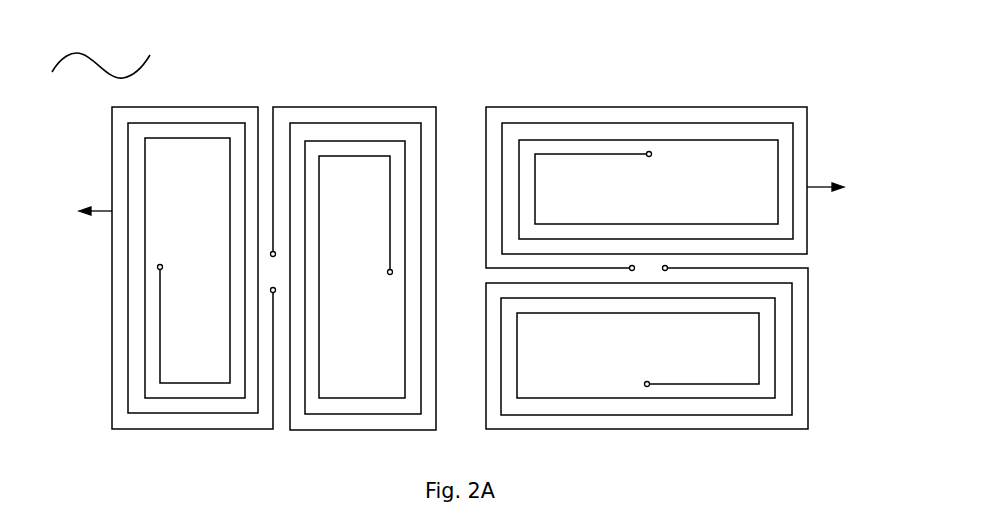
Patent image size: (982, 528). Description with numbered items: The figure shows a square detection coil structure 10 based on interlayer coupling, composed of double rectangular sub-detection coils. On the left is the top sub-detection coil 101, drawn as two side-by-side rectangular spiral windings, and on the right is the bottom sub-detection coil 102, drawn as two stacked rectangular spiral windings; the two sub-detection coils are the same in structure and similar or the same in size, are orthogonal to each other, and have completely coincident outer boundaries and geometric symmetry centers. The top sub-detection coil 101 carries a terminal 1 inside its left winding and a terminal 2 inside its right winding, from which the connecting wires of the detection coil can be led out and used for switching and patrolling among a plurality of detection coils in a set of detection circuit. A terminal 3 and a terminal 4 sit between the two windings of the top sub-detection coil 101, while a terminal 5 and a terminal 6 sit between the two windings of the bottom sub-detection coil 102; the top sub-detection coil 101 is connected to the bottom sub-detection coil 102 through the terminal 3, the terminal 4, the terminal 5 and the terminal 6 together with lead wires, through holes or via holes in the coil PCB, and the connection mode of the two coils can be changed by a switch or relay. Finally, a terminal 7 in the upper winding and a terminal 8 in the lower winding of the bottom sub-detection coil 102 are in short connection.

The detection coil structure 10 is at (101, 56).
The top sub-detection coil 101 is at (71, 210).
The bottom sub-detection coil 102 is at (850, 187).
The terminal 1 is at (192, 268).
The terminal 2 is at (354, 268).
The terminal 3 is at (280, 265).
The terminal 4 is at (280, 290).
The terminal 5 is at (639, 267).
The terminal 6 is at (660, 267).
The terminal 7 is at (646, 187).
The terminal 8 is at (647, 348).